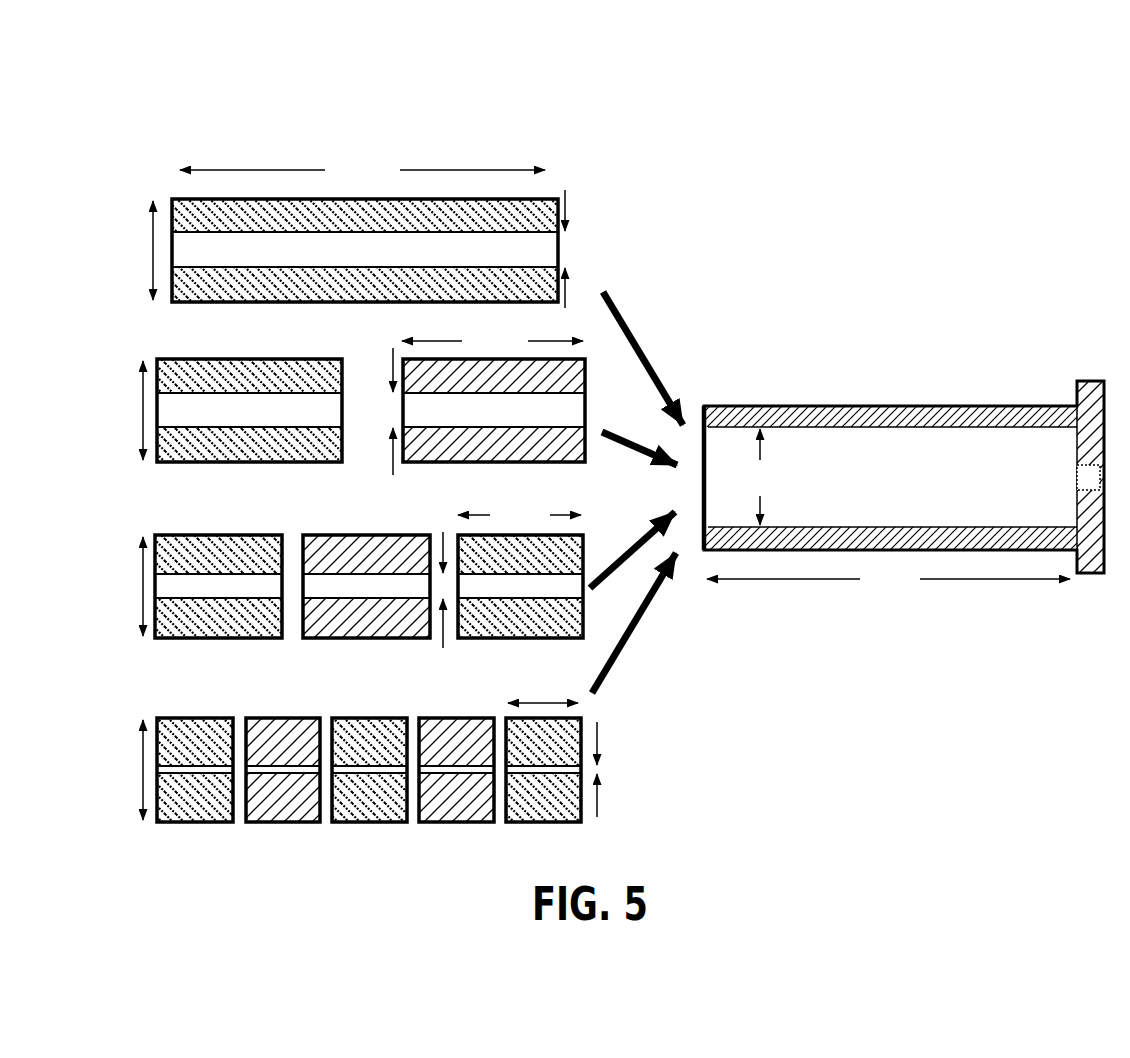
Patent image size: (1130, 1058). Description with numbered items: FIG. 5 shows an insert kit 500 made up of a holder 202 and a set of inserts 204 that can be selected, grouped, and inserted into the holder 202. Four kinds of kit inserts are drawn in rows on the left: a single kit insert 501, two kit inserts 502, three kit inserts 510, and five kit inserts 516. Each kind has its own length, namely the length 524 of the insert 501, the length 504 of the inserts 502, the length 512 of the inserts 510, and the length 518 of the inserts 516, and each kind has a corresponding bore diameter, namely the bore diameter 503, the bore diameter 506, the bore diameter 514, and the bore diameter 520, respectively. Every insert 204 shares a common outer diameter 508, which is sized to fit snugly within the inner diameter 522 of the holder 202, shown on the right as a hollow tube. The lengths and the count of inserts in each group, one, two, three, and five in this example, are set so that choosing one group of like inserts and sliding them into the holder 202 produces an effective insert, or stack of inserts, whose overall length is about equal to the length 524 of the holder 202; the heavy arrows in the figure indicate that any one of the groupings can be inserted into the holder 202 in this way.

The insert kit 500 is at (642, 113).
The inserts 204 is at (357, 138).
The holder 202 is at (917, 406).
The kit insert 501 is at (365, 250).
The kit insert 502 is at (371, 410).
The bore diameter 503 is at (593, 249).
The length 504 is at (492, 341).
The bore diameter 506 is at (377, 411).
The common outer diameter 508 is at (126, 510).
The kit insert 510 is at (369, 586).
The length 512 is at (519, 515).
The bore diameter 514 is at (443, 603).
The kit insert 516 is at (369, 770).
The length 518 is at (543, 685).
The bore diameter 520 is at (597, 786).
The inner diameter 522 is at (760, 477).
The length 524 is at (625, 374).